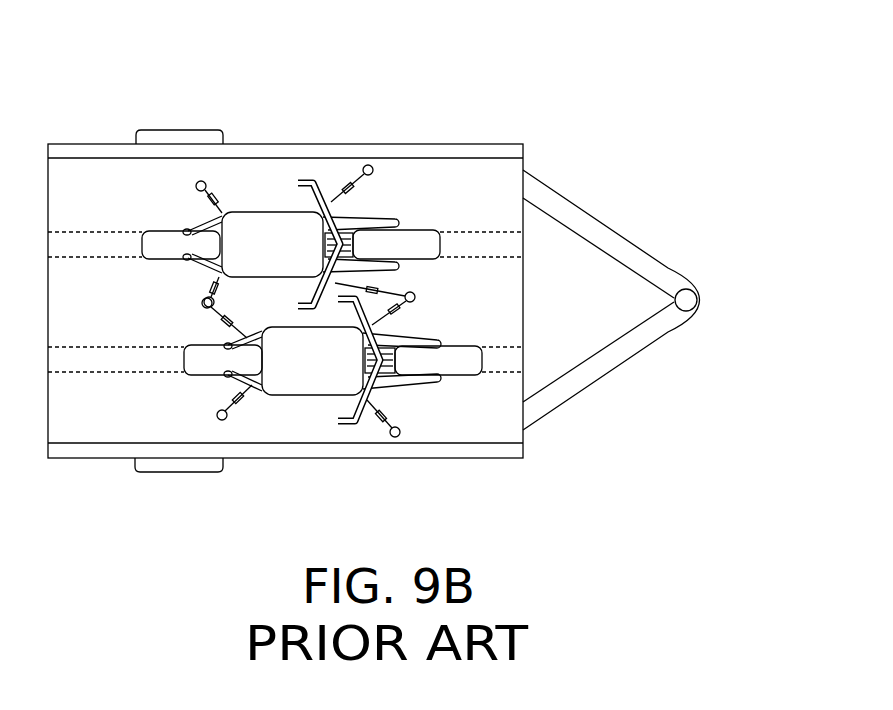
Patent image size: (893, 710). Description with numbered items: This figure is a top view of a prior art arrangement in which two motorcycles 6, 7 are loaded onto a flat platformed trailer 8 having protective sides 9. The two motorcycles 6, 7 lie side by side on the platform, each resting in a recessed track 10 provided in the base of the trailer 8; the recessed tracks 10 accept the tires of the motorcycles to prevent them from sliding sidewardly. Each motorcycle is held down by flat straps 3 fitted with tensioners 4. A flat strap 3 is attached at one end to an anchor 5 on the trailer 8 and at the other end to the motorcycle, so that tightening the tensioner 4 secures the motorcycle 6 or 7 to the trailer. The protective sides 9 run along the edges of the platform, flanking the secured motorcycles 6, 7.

The flat strap 3 is at (337, 193).
The tensioner 4 is at (356, 192).
The anchor 5 is at (374, 176).
The motorcycle 6 is at (280, 255).
The motorcycle 7 is at (319, 373).
The flat platformed trailer 8 is at (623, 108).
The protective side 9 is at (370, 148).
The recessed track 10 is at (101, 256).